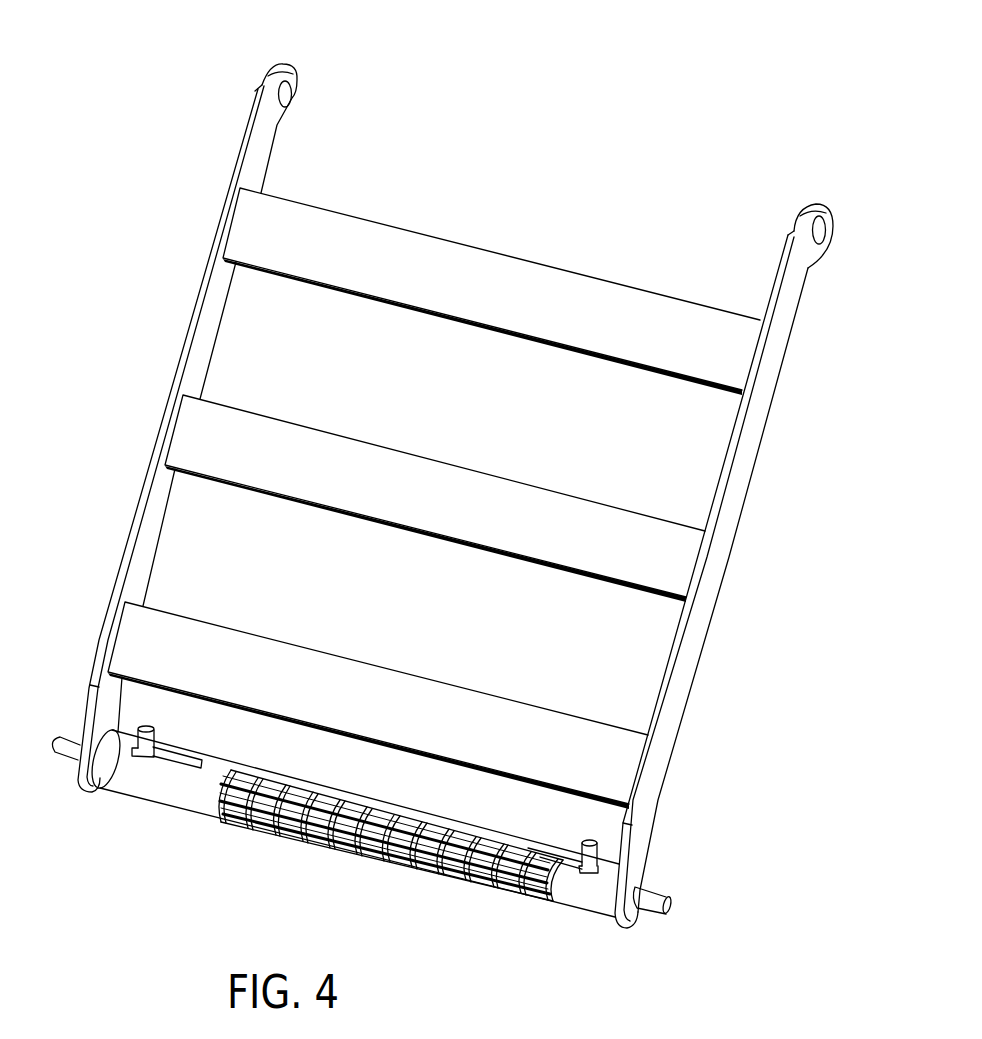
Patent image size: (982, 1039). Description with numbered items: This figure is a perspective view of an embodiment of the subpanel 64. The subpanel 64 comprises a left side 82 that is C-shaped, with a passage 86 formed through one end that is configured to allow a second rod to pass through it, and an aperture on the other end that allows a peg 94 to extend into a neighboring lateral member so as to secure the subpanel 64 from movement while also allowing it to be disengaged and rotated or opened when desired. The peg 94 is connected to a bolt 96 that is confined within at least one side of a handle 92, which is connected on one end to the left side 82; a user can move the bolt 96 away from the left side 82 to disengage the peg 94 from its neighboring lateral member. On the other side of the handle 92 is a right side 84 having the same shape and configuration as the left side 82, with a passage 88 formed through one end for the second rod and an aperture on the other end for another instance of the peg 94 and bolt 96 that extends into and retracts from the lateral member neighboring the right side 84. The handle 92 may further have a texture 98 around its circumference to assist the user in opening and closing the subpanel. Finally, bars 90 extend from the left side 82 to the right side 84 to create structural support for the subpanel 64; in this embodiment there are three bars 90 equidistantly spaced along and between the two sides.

The subpanel 64 is at (567, 141).
The left side 82 is at (240, 142).
The right side 84 is at (796, 315).
The passage 86 is at (294, 91).
The passage 88 is at (828, 224).
The bar 90 is at (485, 276).
The handle 92 is at (170, 782).
The peg 94 is at (61, 742).
The bolt 96 is at (155, 733).
The texture 98 is at (388, 857).